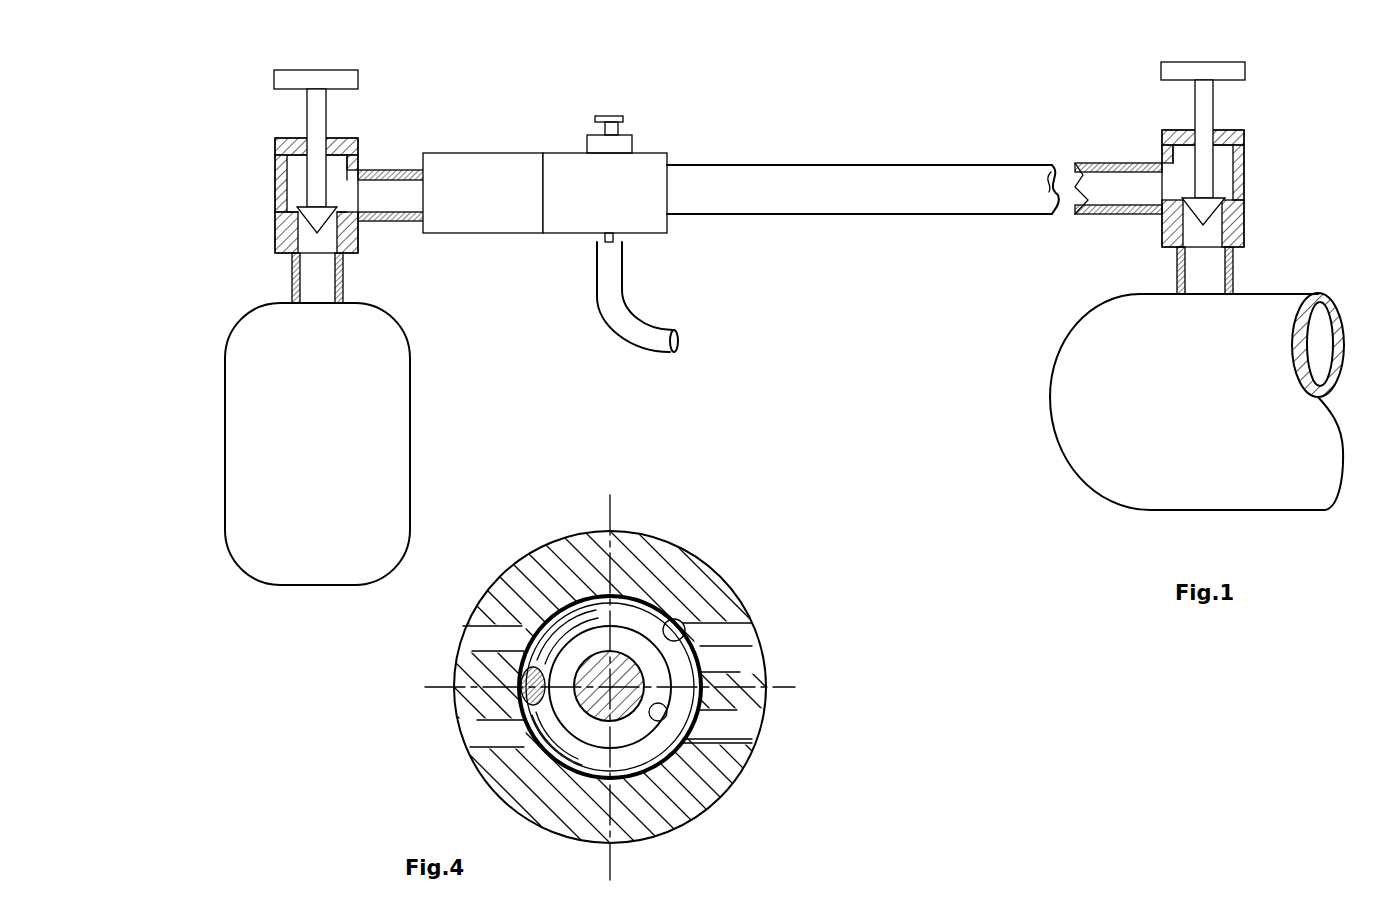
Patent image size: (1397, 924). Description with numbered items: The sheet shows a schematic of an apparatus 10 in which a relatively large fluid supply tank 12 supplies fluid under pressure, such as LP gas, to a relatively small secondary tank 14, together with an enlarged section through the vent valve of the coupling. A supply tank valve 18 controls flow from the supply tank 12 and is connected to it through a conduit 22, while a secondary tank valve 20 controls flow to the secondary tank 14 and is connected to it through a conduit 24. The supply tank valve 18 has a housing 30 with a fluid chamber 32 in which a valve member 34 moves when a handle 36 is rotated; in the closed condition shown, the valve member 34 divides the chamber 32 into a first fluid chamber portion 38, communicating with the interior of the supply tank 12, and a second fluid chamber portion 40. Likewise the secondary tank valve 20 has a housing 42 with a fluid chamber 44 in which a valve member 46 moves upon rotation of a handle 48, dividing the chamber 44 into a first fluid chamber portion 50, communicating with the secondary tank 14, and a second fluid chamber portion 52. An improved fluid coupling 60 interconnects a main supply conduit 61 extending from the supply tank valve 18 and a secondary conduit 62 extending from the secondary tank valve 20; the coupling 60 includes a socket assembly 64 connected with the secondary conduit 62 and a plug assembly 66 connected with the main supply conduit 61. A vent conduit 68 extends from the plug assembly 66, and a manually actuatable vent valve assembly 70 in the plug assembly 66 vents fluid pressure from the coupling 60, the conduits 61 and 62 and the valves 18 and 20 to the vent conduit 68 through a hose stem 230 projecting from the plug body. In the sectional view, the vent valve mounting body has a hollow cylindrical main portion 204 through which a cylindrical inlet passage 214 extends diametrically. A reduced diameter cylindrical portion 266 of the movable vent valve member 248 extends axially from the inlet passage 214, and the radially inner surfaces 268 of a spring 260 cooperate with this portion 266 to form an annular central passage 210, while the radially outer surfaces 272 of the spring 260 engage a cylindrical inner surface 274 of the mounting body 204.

In FIG. 1, the apparatus 10 is at (1050, 98).
In FIG. 1, the fluid supply tank 12 is at (1253, 306).
In FIG. 1, the secondary tank 14 is at (253, 460).
In FIG. 1, the supply tank valve 18 is at (1218, 147).
In FIG. 1, the secondary tank valve 20 is at (317, 187).
In FIG. 1, the conduit 22 is at (1178, 268).
In FIG. 1, the conduit 24 is at (292, 290).
In FIG. 1, the housing 30 is at (1243, 132).
In FIG. 1, the fluid chamber 32 is at (1242, 170).
In FIG. 1, the valve member 34 is at (1243, 218).
In FIG. 1, the handle 36 is at (1200, 72).
In FIG. 1, the first fluid chamber portion 38 is at (1195, 233).
In FIG. 1, the second fluid chamber portion 40 is at (1180, 185).
In FIG. 1, the housing 42 is at (283, 146).
In FIG. 1, the fluid chamber 44 is at (352, 157).
In FIG. 1, the valve member 46 is at (298, 208).
In FIG. 1, the handle 48 is at (292, 78).
In FIG. 1, the first fluid chamber portion 50 is at (310, 242).
In FIG. 1, the second fluid chamber portion 52 is at (297, 172).
In FIG. 1, the fluid coupling 60 is at (583, 163).
In FIG. 1, the main supply conduit 61 is at (920, 178).
In FIG. 1, the secondary conduit 62 is at (368, 222).
In FIG. 1, the socket assembly 64 is at (461, 165).
In FIG. 1, the plug assembly 66 is at (640, 180).
In FIG. 1, the vent conduit 68 is at (607, 318).
In FIG. 1, the vent valve assembly 70 is at (623, 118).
In FIG. 1, the hose stem 230 is at (598, 237).
In FIG. 4, the main portion 204 is at (708, 590).
In FIG. 4, the central passage 210 is at (630, 650).
In FIG. 4, the inlet passage 214 is at (470, 732).
In FIG. 4, the movable vent valve member 248 is at (572, 652).
In FIG. 4, the spring 260 is at (522, 675).
In FIG. 4, the cylindrical portion 266 is at (623, 707).
In FIG. 4, the radially inner surfaces 268 is at (663, 708).
In FIG. 4, the radially outer surfaces 272 is at (760, 655).
In FIG. 4, the cylindrical inner surface 274 is at (683, 633).